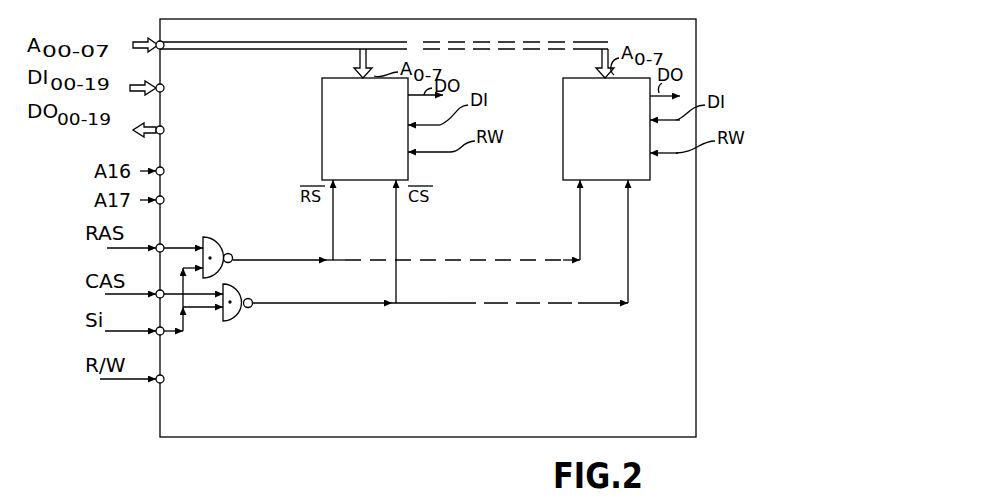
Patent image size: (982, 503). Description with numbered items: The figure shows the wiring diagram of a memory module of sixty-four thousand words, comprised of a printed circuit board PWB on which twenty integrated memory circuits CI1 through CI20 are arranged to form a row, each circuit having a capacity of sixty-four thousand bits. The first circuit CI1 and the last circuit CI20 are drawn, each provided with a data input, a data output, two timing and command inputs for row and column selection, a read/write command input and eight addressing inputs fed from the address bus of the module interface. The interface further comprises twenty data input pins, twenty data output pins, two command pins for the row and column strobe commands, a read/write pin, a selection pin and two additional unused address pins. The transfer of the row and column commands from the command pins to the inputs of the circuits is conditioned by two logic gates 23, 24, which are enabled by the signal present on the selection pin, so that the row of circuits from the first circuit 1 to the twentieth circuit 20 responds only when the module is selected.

The logic gate 23 is at (216, 239).
The logic gate 24 is at (237, 318).
The printed circuit board PWB is at (509, 19).
The integrated memory circuit CI1 is at (365, 129).
The integrated memory circuit CI20 is at (606, 129).
The memory circuit CI1 1 is at (365, 129).
The memory circuit CI20 20 is at (606, 129).